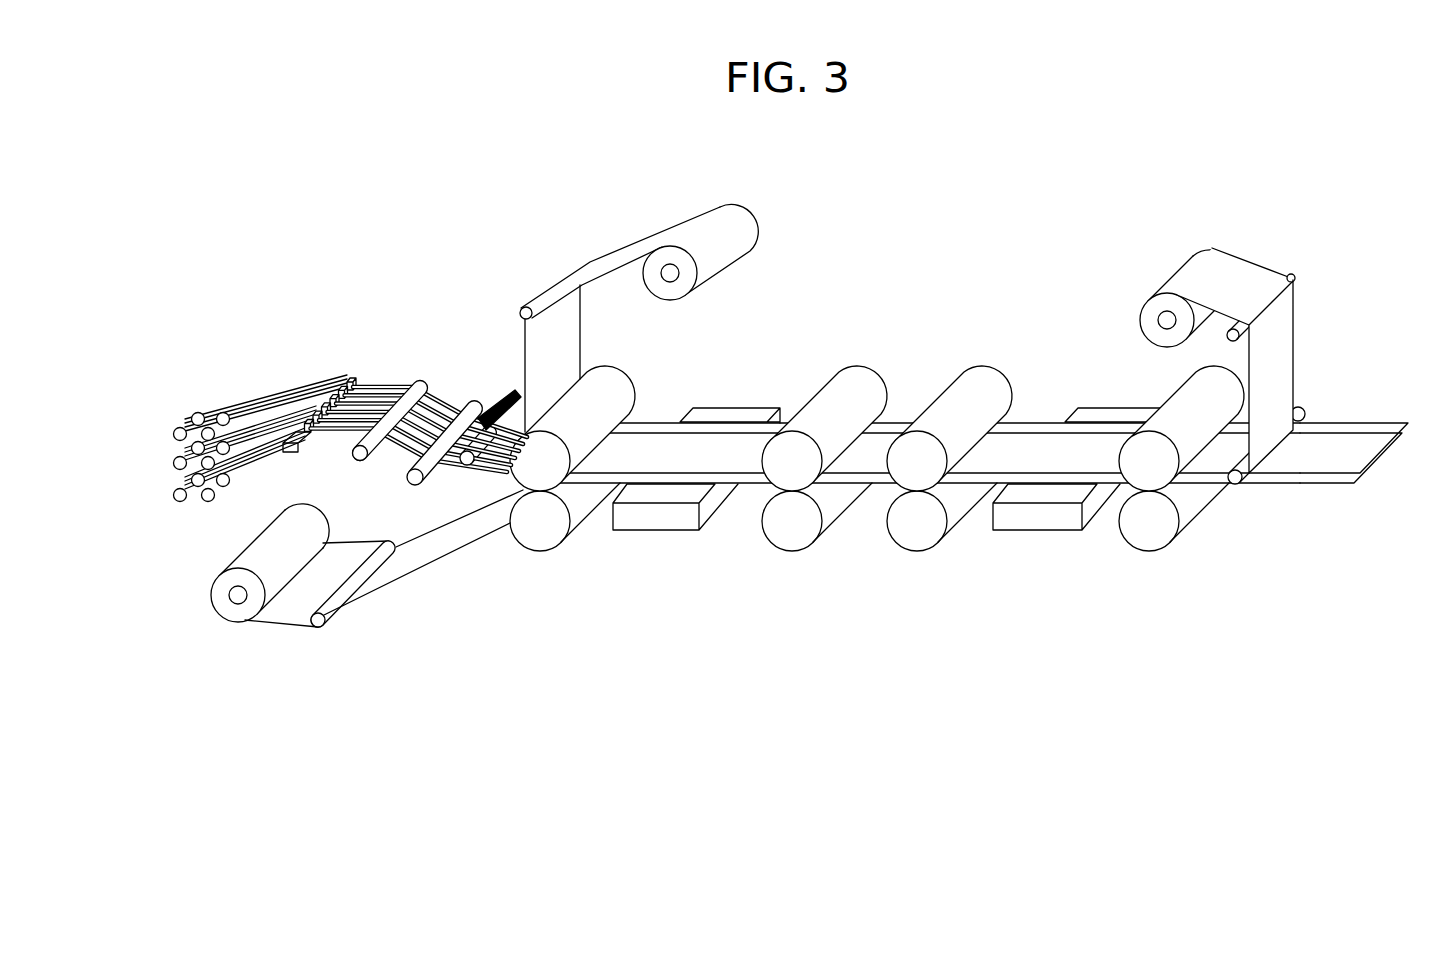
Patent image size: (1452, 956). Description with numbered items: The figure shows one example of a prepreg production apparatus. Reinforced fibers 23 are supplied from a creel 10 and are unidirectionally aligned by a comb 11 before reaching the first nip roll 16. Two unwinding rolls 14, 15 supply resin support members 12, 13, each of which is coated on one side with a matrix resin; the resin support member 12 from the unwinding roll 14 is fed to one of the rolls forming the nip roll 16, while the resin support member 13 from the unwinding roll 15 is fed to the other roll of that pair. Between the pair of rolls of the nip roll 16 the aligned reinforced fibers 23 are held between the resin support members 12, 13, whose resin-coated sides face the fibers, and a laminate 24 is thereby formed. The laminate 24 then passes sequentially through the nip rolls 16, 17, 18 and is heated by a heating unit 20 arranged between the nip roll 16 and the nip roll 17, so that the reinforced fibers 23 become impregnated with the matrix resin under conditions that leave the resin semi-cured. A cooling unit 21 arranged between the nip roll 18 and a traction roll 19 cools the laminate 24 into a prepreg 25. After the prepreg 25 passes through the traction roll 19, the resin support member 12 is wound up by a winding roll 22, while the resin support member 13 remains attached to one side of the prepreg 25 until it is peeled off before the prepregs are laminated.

The creel 10 is at (170, 425).
The comb 11 is at (352, 378).
The resin support member 12 is at (1245, 270).
The resin support member 13 is at (1298, 485).
The unwinding roll 14 is at (672, 274).
The unwinding roll 15 is at (238, 597).
The nip roll 16 is at (642, 364).
The nip roll 17 is at (876, 362).
The nip roll 18 is at (996, 360).
The traction roll 19 is at (1147, 556).
The heating unit 20 is at (738, 405).
The cooling unit 21 is at (1090, 415).
The winding roll 22 is at (1160, 314).
The reinforced fibers 23 is at (385, 380).
The laminate 24 is at (665, 421).
The prepreg 25 is at (1365, 440).